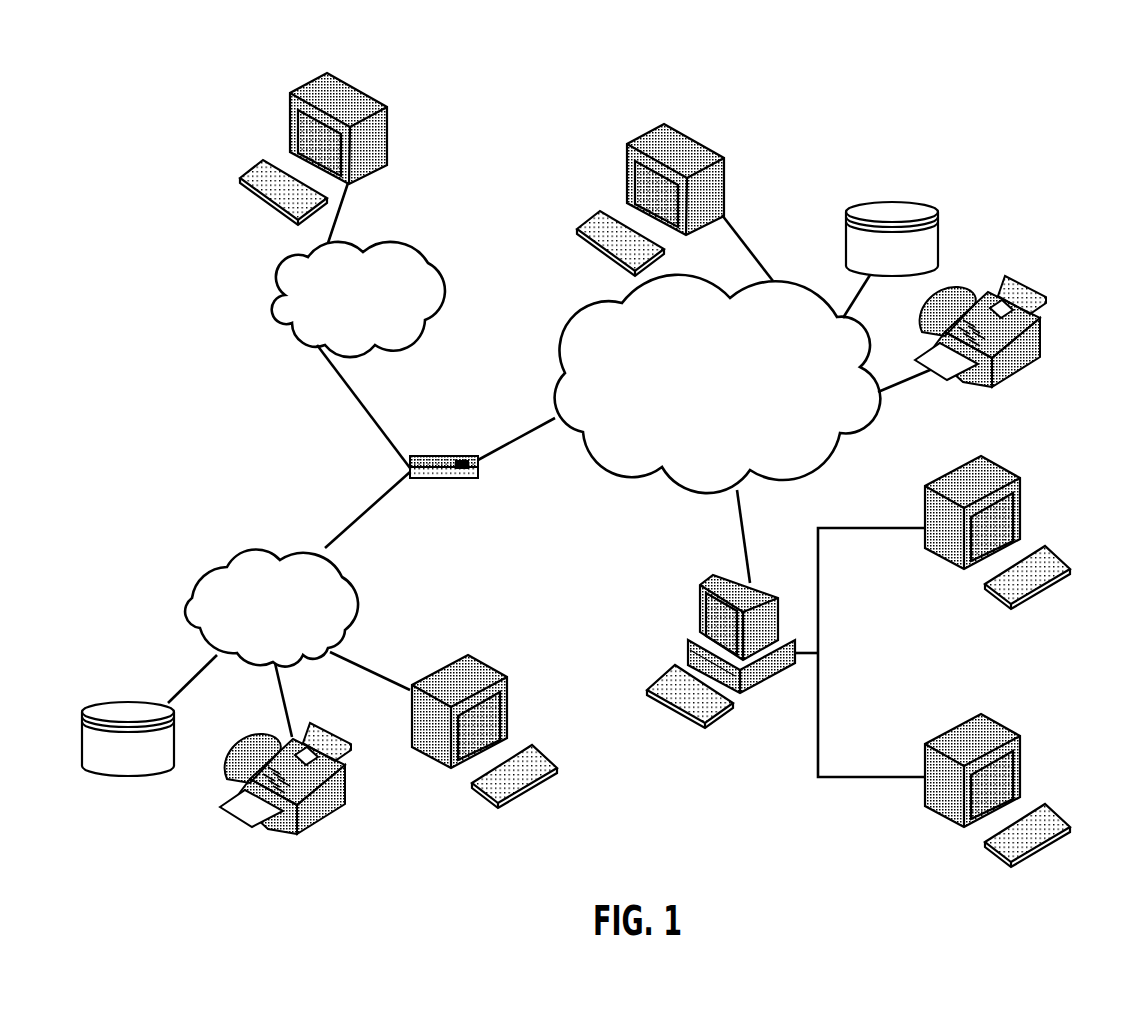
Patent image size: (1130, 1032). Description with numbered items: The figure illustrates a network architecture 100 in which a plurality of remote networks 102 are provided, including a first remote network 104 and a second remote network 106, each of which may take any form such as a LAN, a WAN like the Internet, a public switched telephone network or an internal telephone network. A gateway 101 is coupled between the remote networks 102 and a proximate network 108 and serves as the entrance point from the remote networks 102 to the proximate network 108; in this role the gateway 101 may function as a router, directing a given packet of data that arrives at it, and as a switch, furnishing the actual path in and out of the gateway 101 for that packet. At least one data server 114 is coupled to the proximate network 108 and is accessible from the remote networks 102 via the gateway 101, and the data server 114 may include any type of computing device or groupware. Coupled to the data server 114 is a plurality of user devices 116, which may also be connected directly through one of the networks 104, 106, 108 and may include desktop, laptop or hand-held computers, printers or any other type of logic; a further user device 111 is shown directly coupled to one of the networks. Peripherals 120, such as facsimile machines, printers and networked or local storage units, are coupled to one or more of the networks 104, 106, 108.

The architecture 100 is at (642, 41).
The gateway 101 is at (443, 452).
The remote networks 102 is at (252, 384).
The first remote network 104 is at (188, 580).
The second remote network 106 is at (445, 307).
The proximate network 108 is at (840, 448).
The user device 111 is at (724, 192).
The data server 114 is at (697, 607).
The user devices 116 is at (388, 138).
The peripheral 120 is at (893, 200).